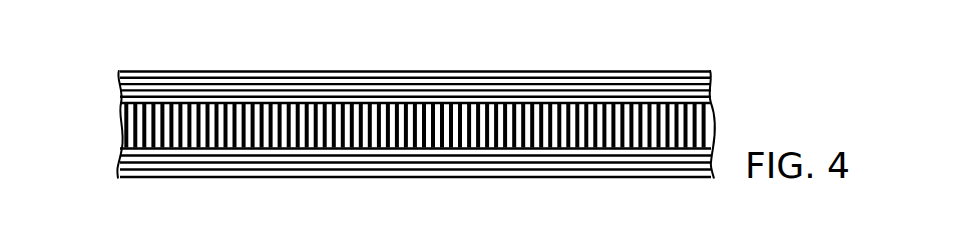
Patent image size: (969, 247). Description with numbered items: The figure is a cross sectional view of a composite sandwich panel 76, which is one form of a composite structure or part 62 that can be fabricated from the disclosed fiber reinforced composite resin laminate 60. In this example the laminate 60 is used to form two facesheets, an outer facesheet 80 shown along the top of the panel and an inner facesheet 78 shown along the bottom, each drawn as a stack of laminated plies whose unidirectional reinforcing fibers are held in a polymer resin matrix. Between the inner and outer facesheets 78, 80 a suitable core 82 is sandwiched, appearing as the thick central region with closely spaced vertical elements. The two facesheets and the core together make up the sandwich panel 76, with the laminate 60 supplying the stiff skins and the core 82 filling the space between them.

The composite sandwich panel 76 is at (419, 119).
The outer facesheet 80 is at (98, 76).
The inner facesheet 78 is at (106, 163).
The core 82 is at (150, 120).
The composite structure or part 62 is at (253, 55).
The fiber reinforced composite resin laminate 60 is at (633, 77).